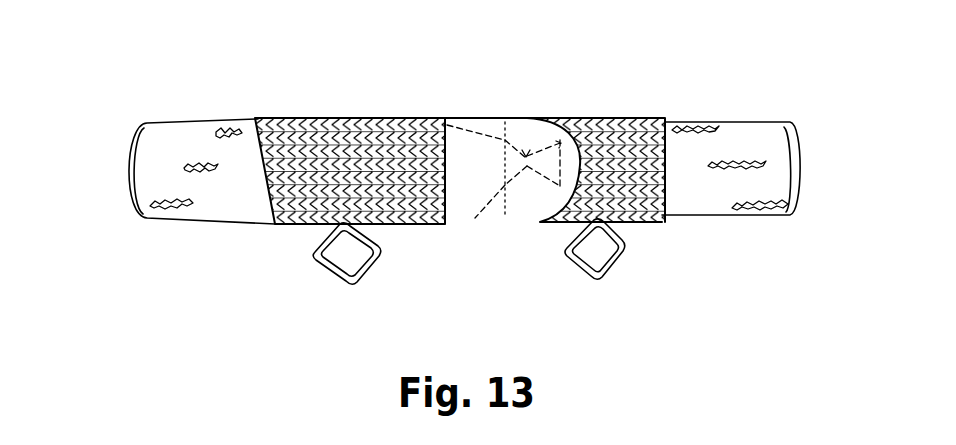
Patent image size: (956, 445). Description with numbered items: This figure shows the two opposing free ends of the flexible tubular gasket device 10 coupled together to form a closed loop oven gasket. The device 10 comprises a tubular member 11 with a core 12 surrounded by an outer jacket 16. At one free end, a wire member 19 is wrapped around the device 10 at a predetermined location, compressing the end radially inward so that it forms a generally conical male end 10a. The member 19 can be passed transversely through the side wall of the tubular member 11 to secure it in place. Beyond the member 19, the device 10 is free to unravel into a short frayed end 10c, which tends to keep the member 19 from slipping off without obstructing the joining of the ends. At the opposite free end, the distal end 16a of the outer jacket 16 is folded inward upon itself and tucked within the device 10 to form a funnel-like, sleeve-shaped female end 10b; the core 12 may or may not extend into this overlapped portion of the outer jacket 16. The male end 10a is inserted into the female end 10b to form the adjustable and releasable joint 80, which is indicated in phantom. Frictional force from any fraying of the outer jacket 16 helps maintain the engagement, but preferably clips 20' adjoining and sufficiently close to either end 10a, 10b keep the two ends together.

The device 10 is at (362, 52).
The core 12 is at (176, 130).
The outer jacket 16 is at (316, 118).
The male end 10a is at (493, 108).
The female end 10b is at (438, 118).
The frayed end 10c is at (572, 110).
The wire member 19 is at (543, 106).
The tubular member 11 is at (282, 237).
The clips 20' is at (481, 278).
The joint 80 is at (498, 222).
The distal end of the outer jacket 16a is at (523, 225).